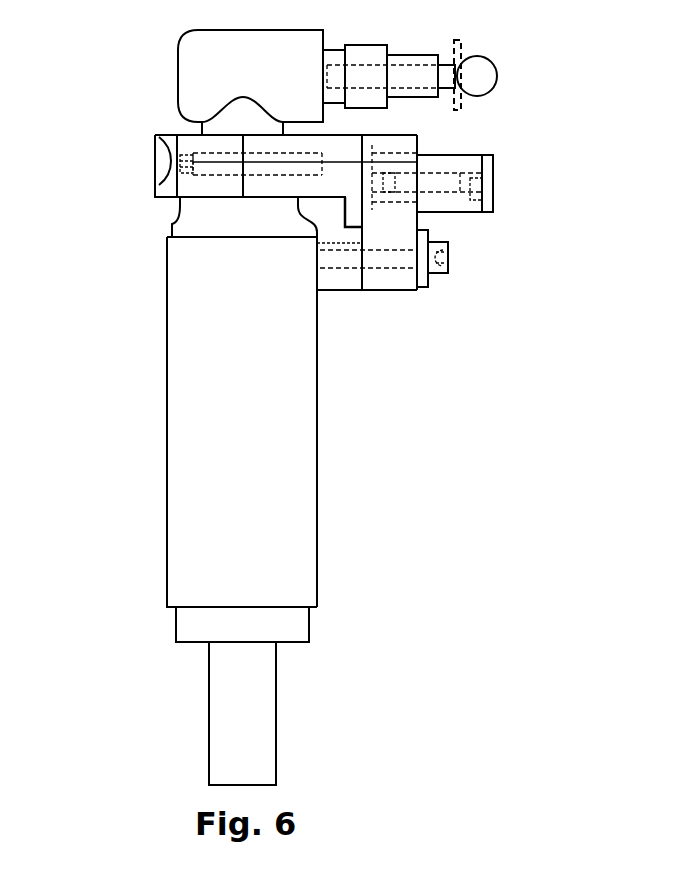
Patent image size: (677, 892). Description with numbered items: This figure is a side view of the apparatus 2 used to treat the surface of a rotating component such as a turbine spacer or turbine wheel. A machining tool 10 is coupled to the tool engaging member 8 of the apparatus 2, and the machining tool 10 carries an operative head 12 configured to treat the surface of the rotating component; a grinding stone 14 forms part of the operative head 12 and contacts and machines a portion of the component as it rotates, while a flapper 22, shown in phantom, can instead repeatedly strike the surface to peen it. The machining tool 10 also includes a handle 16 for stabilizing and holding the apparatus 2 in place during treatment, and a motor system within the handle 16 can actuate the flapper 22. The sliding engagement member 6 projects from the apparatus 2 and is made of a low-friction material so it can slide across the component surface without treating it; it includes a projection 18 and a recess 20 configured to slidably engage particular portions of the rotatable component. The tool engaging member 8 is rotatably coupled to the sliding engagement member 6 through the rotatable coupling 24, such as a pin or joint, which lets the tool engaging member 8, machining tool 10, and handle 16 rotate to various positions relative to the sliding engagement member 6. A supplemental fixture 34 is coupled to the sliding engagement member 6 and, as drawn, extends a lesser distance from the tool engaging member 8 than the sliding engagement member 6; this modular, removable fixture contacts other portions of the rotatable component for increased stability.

The apparatus 2 is at (133, 173).
The sliding engagement member 6 is at (503, 173).
The tool engaging member 8 is at (203, 185).
The machining tool 10 is at (195, 75).
The operative head 12 is at (370, 98).
The grinding stone 14 is at (483, 78).
The handle 16 is at (263, 578).
The projection 18 is at (493, 188).
The recess 20 is at (482, 203).
The flapper 22 is at (458, 110).
The rotatable coupling 24 is at (345, 203).
The supplemental fixture 34 is at (450, 262).